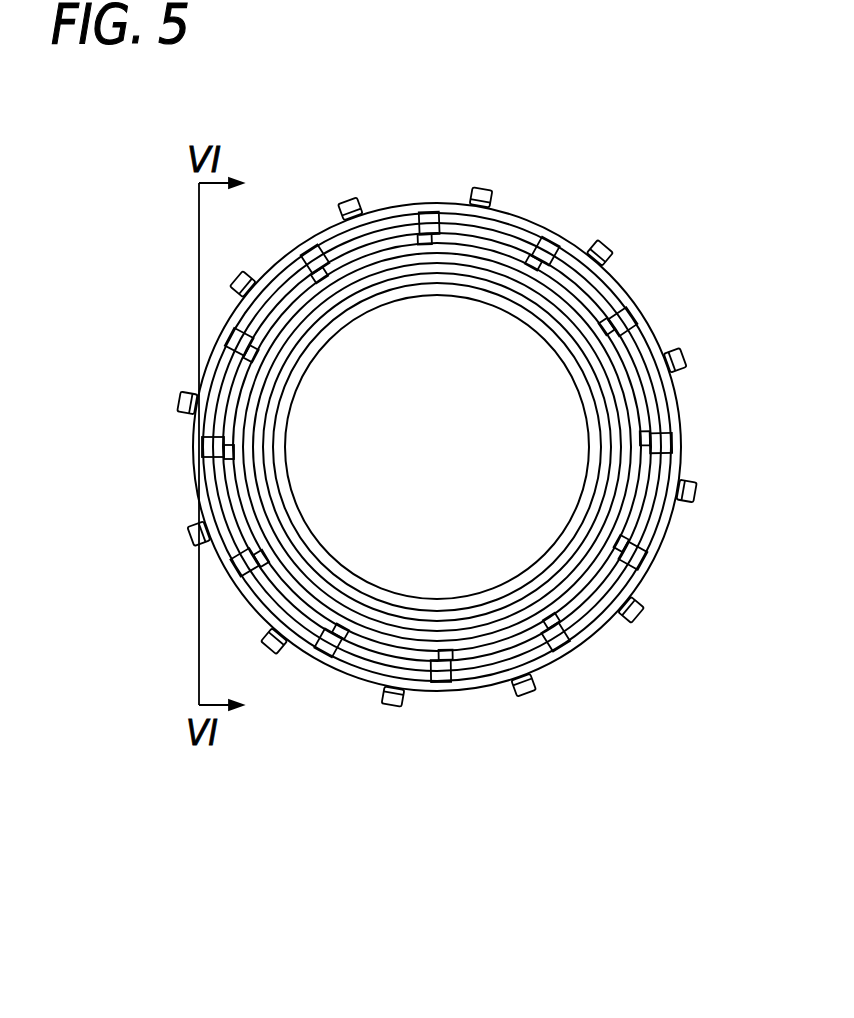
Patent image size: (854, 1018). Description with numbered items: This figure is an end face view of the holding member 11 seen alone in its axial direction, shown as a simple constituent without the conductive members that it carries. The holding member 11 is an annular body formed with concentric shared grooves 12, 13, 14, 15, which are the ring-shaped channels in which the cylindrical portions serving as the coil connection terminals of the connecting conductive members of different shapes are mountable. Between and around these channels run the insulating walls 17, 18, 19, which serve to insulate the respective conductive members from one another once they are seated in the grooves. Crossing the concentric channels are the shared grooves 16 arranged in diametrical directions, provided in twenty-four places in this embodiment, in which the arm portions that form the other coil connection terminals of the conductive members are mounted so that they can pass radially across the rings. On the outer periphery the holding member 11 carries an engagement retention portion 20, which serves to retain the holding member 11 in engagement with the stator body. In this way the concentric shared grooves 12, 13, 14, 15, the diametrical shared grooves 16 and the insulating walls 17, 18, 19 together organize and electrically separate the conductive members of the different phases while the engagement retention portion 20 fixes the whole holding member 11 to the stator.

The holding member 11 is at (645, 326).
The concentric shared groove 12 is at (665, 463).
The concentric shared groove 13 is at (605, 574).
The concentric shared groove 14 is at (557, 592).
The concentric shared groove 15 is at (612, 443).
The diametrical shared groove 16 is at (428, 248).
The insulating wall 17 is at (289, 632).
The insulating wall 18 is at (295, 582).
The insulating wall 19 is at (380, 615).
The engagement retention portion 20 is at (535, 688).